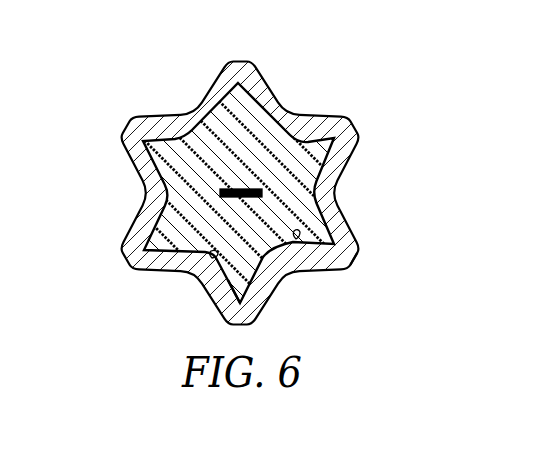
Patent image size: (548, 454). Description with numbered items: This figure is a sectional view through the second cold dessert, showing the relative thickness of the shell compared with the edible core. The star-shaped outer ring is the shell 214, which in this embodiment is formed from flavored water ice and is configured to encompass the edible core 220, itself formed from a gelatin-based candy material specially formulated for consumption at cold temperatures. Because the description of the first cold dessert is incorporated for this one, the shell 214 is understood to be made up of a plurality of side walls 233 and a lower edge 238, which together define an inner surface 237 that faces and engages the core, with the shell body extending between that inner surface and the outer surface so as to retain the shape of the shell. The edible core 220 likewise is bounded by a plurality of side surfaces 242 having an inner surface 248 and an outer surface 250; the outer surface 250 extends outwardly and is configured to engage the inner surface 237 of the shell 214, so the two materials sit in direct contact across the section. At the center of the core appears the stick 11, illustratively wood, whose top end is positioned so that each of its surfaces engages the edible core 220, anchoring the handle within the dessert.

The shell 214 is at (300, 85).
The outer shell layer 238 is at (140, 118).
The inner core boundary 237 is at (162, 160).
The edible core 220 is at (292, 198).
The stick 11 is at (233, 204).
The outer lobe tip 233 is at (359, 251).
The interface feature 248 is at (212, 258).
The interface feature 242 is at (296, 239).
The interface edge 250 is at (228, 257).